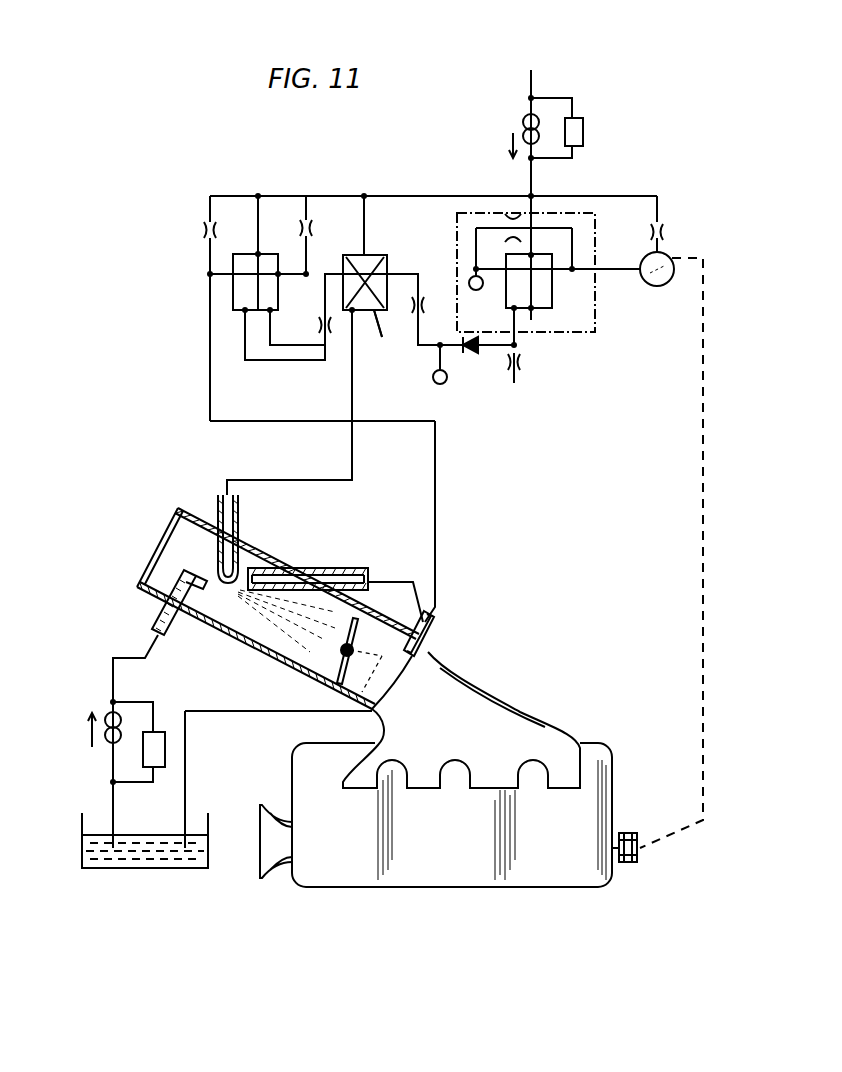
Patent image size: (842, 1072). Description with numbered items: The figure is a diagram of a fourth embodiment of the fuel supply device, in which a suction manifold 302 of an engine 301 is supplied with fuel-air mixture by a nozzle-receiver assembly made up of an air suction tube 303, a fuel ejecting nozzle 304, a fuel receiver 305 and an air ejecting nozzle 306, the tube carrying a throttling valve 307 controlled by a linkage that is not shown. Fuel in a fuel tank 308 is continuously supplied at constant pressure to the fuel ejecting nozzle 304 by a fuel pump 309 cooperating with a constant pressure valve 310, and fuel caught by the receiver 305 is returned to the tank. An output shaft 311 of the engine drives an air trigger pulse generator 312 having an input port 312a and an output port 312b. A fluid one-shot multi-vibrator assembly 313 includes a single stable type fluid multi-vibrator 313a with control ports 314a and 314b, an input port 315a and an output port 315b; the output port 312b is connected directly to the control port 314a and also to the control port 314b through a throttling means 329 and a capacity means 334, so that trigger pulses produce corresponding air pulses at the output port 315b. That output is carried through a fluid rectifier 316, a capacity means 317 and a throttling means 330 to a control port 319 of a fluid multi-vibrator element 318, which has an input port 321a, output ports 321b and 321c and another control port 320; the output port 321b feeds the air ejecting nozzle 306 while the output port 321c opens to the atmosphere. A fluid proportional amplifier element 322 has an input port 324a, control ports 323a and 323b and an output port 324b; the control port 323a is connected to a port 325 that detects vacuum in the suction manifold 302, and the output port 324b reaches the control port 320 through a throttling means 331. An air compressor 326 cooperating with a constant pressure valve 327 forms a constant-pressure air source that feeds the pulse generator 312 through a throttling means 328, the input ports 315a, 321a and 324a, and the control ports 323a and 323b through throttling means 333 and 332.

The engine 301 is at (352, 870).
The suction manifold 302 is at (355, 788).
The air suction tube 303 is at (178, 535).
The fuel ejecting nozzle 304 is at (160, 618).
The fuel receiver 305 is at (346, 567).
The air ejecting nozzle 306 is at (240, 512).
The throttling valve 307 is at (330, 668).
The fuel tank 308 is at (126, 868).
The fuel pump 309 is at (106, 740).
The constant pressure valve 310 is at (162, 730).
The output shaft 311 is at (638, 852).
The air trigger pulse generator 312 is at (657, 287).
The input port 312a is at (661, 252).
The output port 312b is at (641, 280).
The fluid one-shot multi-vibrator assembly 313 is at (596, 265).
The single stable type fluid multi-vibrator 313a is at (549, 253).
The control port 314a is at (553, 271).
The control port 314b is at (507, 272).
The input port 315a is at (532, 254).
The output port 315b is at (516, 310).
The fluid rectifier 316 is at (468, 355).
The capacity means 317 is at (443, 384).
The fluid multi-vibrator element 318 is at (379, 260).
The control port 319 is at (388, 273).
The control port 320 is at (344, 256).
The input port 321a is at (364, 254).
The output port 321b is at (352, 312).
The output port 321c is at (379, 339).
The fluid proportional amplifier element 322 is at (243, 253).
The control port 323a is at (232, 276).
The control port 323b is at (279, 276).
The input port 324a is at (258, 253).
The output port 324b is at (244, 312).
The port 325 is at (434, 636).
The air compressor 326 is at (524, 115).
The constant pressure valve 327 is at (584, 128).
The throttling means 328 is at (660, 226).
The throttling means 329 is at (513, 213).
The throttling means 330 is at (412, 315).
The throttling means 331 is at (322, 334).
The throttling means 332 is at (316, 220).
The throttling means 333 is at (204, 232).
The capacity means 334 is at (472, 276).